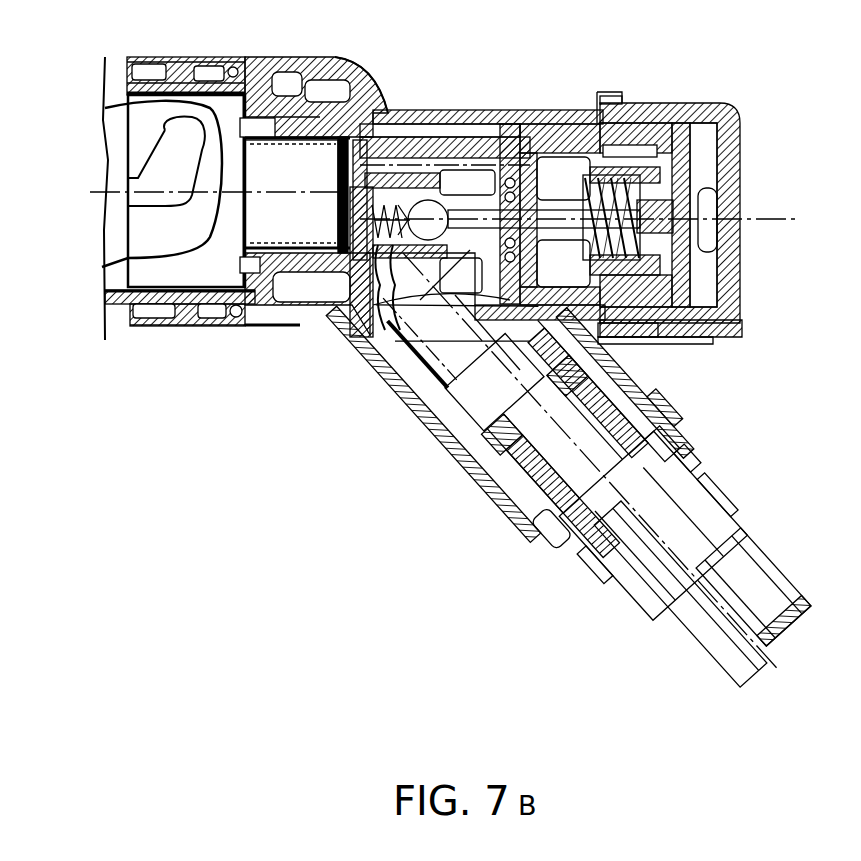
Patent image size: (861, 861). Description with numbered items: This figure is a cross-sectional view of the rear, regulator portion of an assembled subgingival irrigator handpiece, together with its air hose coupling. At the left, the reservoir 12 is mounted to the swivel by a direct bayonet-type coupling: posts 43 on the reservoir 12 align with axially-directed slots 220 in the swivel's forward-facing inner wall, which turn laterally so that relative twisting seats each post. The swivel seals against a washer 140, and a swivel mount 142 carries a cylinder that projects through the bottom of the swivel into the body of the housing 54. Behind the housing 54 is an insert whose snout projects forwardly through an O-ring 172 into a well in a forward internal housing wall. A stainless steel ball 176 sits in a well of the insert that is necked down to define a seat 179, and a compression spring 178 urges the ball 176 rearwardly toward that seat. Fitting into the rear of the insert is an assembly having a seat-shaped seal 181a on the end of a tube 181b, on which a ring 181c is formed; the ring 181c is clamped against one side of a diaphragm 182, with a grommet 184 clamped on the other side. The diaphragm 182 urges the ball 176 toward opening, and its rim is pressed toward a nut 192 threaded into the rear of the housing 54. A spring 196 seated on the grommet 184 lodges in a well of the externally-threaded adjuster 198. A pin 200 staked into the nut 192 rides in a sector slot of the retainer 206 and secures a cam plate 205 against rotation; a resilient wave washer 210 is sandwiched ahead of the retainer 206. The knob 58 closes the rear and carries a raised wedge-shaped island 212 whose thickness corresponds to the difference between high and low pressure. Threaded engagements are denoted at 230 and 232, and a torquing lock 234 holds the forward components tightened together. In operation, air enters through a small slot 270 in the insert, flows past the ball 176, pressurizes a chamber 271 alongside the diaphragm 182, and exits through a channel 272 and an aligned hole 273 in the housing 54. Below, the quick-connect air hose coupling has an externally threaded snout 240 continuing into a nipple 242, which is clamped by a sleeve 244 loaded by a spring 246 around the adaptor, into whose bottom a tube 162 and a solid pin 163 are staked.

The reservoir 12 is at (112, 270).
The posts 43 is at (178, 60).
The washer 140 is at (242, 58).
The swivel mount 142 is at (268, 305).
The O-ring 172 is at (380, 100).
The slots 220 is at (130, 68).
The slot 270 is at (360, 312).
The hole 273 is at (340, 170).
The ball 176 is at (347, 200).
The housing 54 is at (385, 118).
The channel 272 is at (480, 135).
The seat-shaped seal 181a is at (445, 184).
The tube 181b is at (437, 251).
The ring 181c is at (470, 310).
The seat 179 is at (427, 247).
The compression spring 178 is at (409, 289).
The torquing lock 234 is at (740, 215).
The chamber 271 is at (515, 140).
The diaphragm 182 is at (578, 120).
The grommet 184 is at (530, 272).
The knob 58 is at (738, 108).
The threaded engagement 230 is at (562, 112).
The raised wedge-shaped island 212 is at (577, 100).
The nut 192 is at (623, 120).
The pin 200 is at (657, 120).
The threaded engagement 232 is at (733, 115).
The retainer 206 is at (740, 138).
The adjuster 198 is at (732, 190).
The resilient wave washer 210 is at (740, 255).
The spring 196 is at (705, 278).
The cam plate 205 is at (690, 340).
The externally threaded snout 240 is at (468, 446).
The sleeve 244 is at (652, 420).
The spring 246 is at (526, 506).
The nipple 242 is at (548, 520).
The tube 162 is at (790, 590).
The solid pin 163 is at (712, 676).